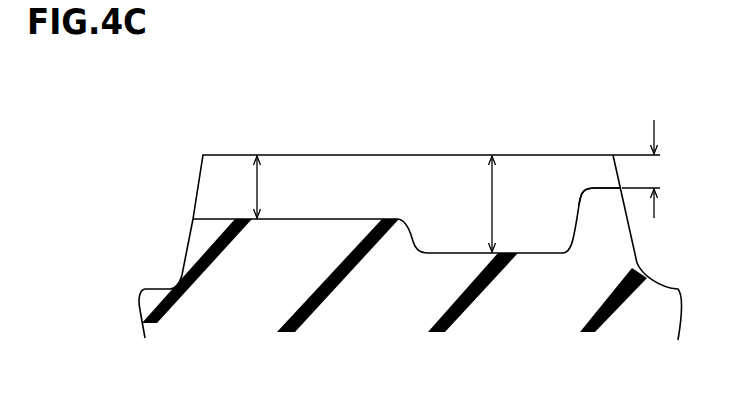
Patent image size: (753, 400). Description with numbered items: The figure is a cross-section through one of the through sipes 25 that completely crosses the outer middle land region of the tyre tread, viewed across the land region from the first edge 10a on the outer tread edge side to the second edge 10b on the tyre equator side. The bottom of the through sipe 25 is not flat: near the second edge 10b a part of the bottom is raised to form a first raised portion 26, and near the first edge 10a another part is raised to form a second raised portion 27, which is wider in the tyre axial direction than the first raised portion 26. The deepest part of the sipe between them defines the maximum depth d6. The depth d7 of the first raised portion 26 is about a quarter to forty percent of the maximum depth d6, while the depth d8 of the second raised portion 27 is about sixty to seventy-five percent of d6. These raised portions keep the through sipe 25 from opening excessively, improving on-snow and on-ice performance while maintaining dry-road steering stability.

The first edge 10a is at (203, 155).
The second edge 10b is at (613, 155).
The through sipe 25 is at (442, 252).
The first raised portion 26 is at (601, 187).
The second raised portion 27 is at (338, 218).
The maximum depth of the through sipe d6 is at (493, 203).
The depth of the first raised portion d7 is at (652, 169).
The depth of the second raised portion d8 is at (258, 187).